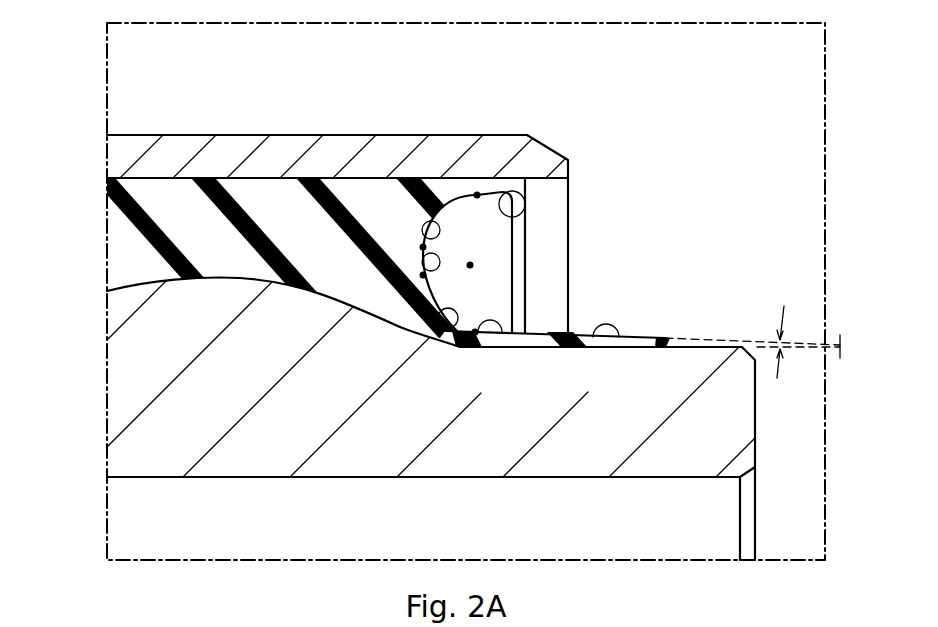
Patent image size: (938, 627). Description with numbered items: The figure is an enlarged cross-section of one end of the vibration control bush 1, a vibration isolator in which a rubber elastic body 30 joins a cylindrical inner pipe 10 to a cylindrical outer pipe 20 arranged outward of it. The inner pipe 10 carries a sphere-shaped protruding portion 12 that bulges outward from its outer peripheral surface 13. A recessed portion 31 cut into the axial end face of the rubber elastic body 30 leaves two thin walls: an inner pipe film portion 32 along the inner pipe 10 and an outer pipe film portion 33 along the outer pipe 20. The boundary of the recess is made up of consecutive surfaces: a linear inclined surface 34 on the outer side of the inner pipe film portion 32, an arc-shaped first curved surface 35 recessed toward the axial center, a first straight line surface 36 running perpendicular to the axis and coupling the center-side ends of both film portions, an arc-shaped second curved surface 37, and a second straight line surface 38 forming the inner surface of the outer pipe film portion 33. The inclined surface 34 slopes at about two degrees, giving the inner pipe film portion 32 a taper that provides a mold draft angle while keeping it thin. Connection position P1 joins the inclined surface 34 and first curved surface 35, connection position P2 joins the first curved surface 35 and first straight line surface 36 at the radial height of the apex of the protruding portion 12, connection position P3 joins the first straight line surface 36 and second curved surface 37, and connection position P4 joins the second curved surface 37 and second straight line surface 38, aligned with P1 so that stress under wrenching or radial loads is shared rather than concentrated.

The vibration control bush 1 is at (709, 112).
The inner pipe 10 is at (784, 423).
The protruding portion 12 is at (203, 300).
The outer peripheral surface 13 is at (718, 340).
The outer pipe 20 is at (333, 147).
The rubber elastic body 30 is at (84, 229).
The recessed portion 31 is at (472, 263).
The inner pipe film portion 32 is at (643, 336).
The outer pipe film portion 33 is at (485, 188).
The inclined surface 34 is at (612, 340).
The first curved surface 35 is at (441, 340).
The first straight line surface 36 is at (423, 275).
The second curved surface 37 is at (423, 247).
The second straight line surface 38 is at (527, 196).
The connection position P1 is at (477, 334).
The connection position P2 is at (423, 275).
The connection position P3 is at (422, 247).
The connection position P4 is at (477, 193).